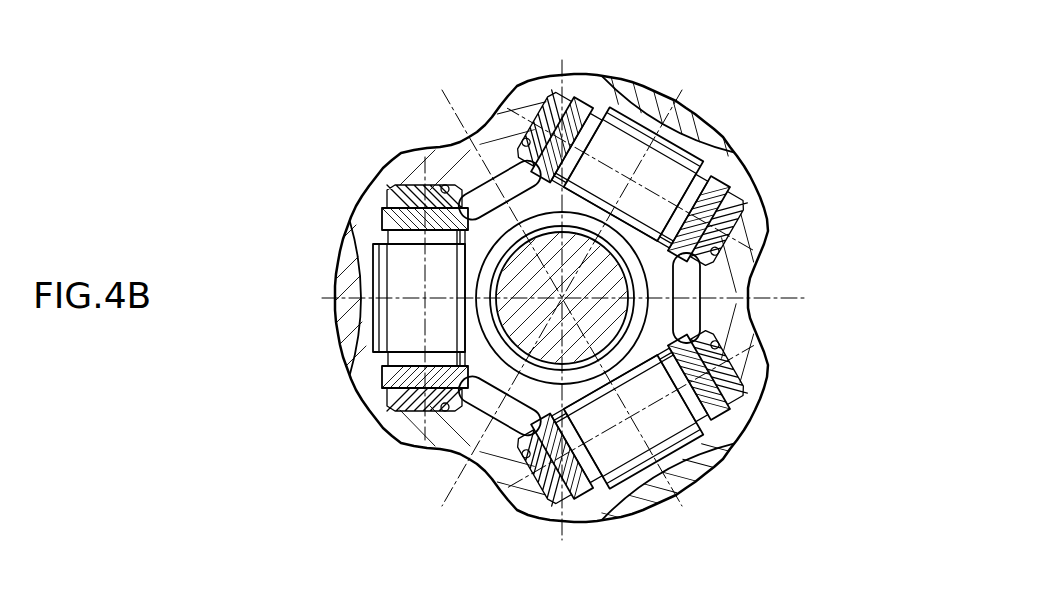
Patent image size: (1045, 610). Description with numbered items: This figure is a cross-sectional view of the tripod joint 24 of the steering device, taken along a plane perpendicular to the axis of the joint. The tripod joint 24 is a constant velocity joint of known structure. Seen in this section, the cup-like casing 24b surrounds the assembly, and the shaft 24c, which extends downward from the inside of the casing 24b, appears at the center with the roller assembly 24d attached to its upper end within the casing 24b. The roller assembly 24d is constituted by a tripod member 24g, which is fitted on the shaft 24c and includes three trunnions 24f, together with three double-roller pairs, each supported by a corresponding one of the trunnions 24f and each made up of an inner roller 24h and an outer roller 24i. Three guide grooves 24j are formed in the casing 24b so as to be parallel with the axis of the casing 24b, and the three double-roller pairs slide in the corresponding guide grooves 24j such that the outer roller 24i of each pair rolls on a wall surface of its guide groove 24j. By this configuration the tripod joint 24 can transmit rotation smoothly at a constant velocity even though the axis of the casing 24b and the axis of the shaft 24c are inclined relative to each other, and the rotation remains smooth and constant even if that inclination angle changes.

The tripod joint 24 is at (826, 115).
The casing 24b is at (757, 224).
The shaft 24c is at (613, 318).
The roller assembly 24d is at (514, 406).
The trunnion 24f is at (617, 150).
The tripod member 24g is at (493, 228).
The inner roller 24h is at (722, 178).
The outer roller 24i is at (557, 104).
The guide groove 24j is at (450, 184).